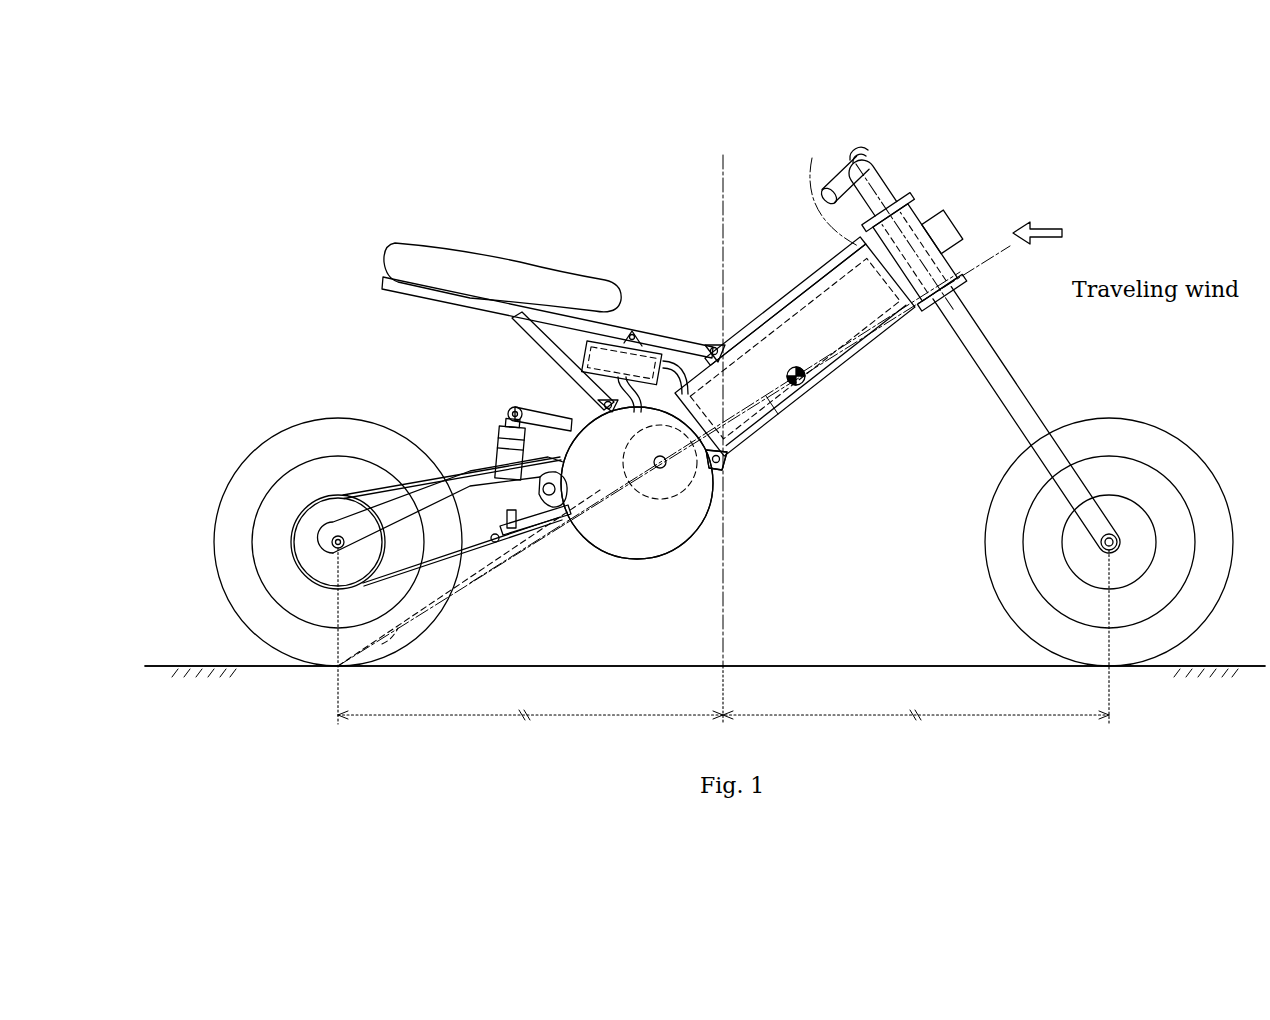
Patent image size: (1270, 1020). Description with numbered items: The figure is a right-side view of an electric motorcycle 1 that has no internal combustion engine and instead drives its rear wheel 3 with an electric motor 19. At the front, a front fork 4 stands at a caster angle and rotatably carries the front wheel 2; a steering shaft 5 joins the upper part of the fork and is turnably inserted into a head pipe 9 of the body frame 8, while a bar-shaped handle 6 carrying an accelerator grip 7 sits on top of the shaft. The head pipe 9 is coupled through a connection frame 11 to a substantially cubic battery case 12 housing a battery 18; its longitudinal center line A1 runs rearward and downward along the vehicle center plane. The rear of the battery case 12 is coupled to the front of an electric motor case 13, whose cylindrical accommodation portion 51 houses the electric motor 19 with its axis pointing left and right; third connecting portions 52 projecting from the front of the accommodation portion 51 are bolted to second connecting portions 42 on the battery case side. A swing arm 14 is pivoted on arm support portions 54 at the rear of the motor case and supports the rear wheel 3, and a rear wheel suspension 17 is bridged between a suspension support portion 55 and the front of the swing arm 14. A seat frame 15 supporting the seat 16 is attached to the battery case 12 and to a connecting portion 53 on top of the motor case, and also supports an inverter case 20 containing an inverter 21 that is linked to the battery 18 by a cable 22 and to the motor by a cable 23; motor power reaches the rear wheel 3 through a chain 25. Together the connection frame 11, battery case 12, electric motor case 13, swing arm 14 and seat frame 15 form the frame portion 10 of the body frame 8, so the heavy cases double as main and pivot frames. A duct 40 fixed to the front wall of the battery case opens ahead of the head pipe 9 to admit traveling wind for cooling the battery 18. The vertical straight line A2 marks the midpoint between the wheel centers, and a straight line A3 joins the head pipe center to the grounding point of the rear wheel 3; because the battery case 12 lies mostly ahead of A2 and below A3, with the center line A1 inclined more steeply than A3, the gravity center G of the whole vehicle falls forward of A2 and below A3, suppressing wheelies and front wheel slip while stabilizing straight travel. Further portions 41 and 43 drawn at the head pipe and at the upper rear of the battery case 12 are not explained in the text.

The electric motorcycle 1 is at (345, 160).
The front wheel 2 is at (1133, 440).
The rear wheel 3 is at (258, 432).
The front fork 4 is at (1013, 380).
The steering shaft 5 is at (925, 200).
The handle 6 is at (880, 170).
The accelerator grip 7 is at (840, 168).
The body frame 8 is at (893, 440).
The head pipe 9 is at (928, 345).
The frame portion 10 is at (834, 391).
The connection frame 11 is at (830, 188).
The battery case 12 is at (808, 282).
The electric motor case 13 is at (627, 540).
The swing arm 14 is at (512, 548).
The seat frame 15 is at (383, 284).
The seat 16 is at (443, 257).
The rear wheel suspension 17 is at (492, 440).
The battery 18 is at (770, 300).
The electric motor 19 is at (667, 500).
The inverter case 20 is at (612, 352).
The inverter 21 is at (593, 370).
The cable 22 is at (645, 376).
The cable 23 is at (630, 332).
The chain 25 is at (376, 462).
The duct 40 is at (952, 238).
The bracket 41 is at (845, 233).
The second connecting portions 42 is at (708, 350).
The bracket 43 is at (720, 347).
The accommodation portion 51 is at (660, 540).
The third connecting portions 52 is at (724, 470).
The connecting portion 53 is at (556, 360).
The arm support portions 54 is at (547, 510).
The suspension support portion 55 is at (500, 418).
The center line A1 is at (772, 405).
The straight line A2 is at (720, 168).
The straight line A3 is at (392, 640).
The gravity center G is at (800, 385).